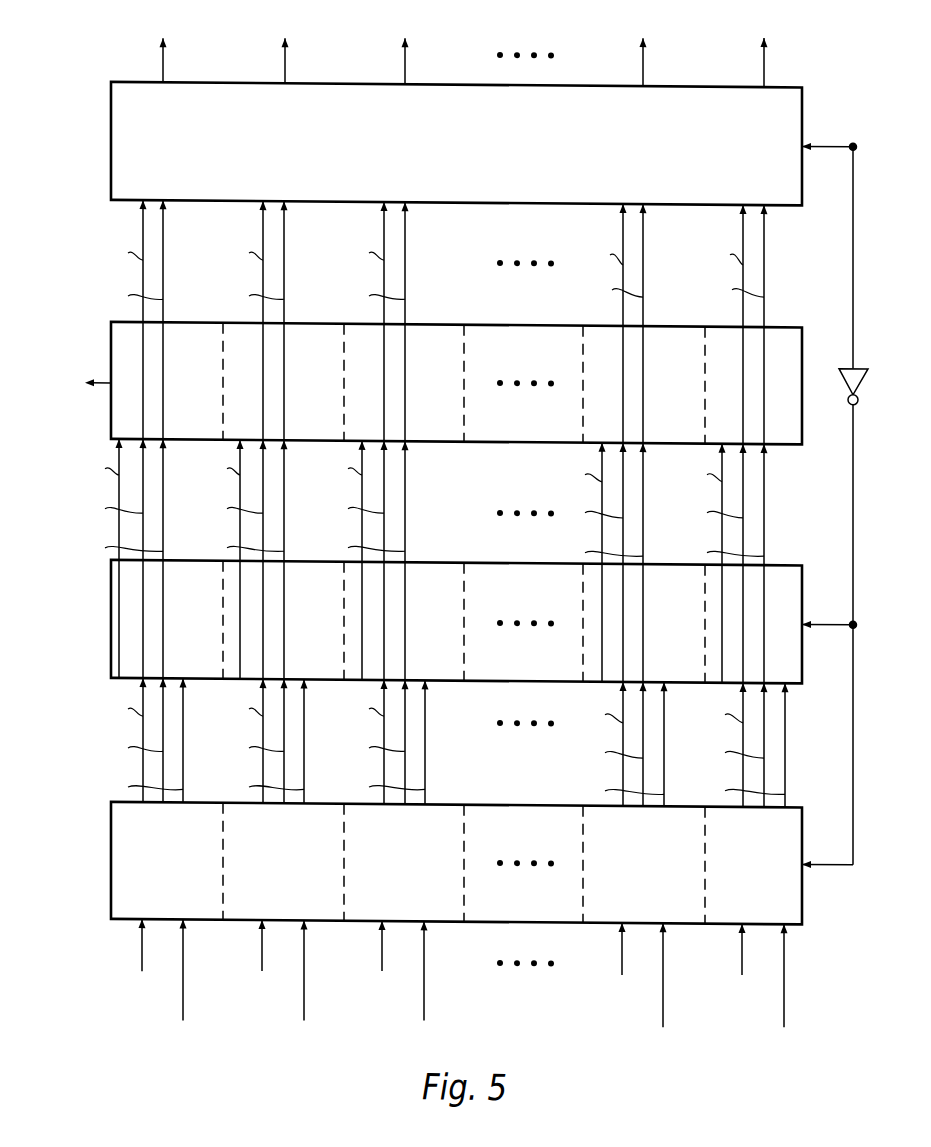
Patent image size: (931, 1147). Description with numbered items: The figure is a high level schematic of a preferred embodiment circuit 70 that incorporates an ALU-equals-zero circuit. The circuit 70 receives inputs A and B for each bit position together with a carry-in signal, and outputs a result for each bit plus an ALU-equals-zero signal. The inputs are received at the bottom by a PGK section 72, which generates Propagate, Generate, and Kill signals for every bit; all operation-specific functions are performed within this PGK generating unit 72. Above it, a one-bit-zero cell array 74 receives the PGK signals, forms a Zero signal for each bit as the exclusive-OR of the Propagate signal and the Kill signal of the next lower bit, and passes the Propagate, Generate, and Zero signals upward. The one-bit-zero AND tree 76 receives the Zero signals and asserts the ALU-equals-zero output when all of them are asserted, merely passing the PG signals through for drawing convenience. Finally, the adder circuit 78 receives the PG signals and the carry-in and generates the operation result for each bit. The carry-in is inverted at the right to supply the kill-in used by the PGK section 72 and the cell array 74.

The circuit 70 is at (68, 180).
The PGK section 72 is at (111, 864).
The one-bit-zero cell array 74 is at (111, 624).
The one-bit-zero AND tree 76 is at (111, 362).
The adder circuit 78 is at (111, 91).